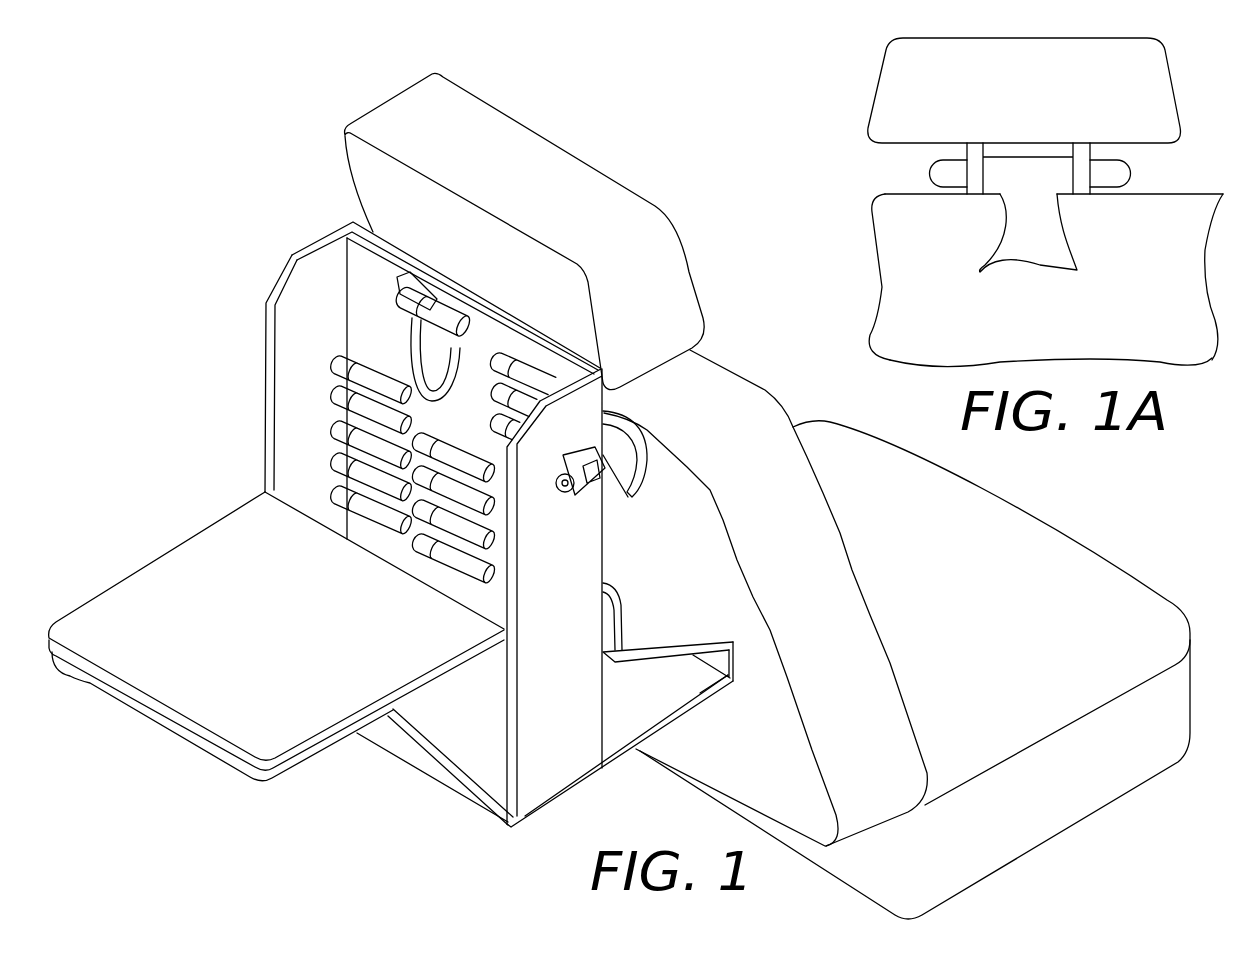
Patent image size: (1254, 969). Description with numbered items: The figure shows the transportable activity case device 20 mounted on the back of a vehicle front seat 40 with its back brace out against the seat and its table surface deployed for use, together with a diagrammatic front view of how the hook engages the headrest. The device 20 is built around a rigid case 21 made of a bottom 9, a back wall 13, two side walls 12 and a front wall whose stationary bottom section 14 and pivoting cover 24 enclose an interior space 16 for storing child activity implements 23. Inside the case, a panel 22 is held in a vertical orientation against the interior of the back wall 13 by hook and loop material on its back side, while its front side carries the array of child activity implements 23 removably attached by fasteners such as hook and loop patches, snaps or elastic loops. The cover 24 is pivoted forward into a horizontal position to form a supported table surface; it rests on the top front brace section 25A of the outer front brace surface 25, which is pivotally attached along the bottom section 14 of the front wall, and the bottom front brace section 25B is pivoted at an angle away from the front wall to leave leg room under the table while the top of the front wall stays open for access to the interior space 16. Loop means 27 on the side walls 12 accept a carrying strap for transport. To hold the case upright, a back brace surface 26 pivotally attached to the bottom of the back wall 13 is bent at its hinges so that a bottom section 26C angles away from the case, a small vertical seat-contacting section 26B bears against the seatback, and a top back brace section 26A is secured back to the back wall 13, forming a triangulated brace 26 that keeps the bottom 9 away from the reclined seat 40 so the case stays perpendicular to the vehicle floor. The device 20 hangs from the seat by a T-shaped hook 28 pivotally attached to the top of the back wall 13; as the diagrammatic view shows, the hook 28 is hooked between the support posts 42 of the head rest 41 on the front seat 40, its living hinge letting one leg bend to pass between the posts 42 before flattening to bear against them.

In FIG. 1, the bottom 9 is at (563, 807).
In FIG. 1, the side walls 12 is at (537, 740).
In FIG. 1, the back wall 13 is at (480, 298).
In FIG. 1, the stationary bottom section of the front wall 14 is at (483, 752).
In FIG. 1, the interior space 16 is at (320, 497).
In FIG. 1, the transportable activity case device 20 is at (252, 322).
In FIG. 1, the rigid case 21 is at (318, 243).
In FIG. 1, the panel 22 is at (368, 255).
In FIG. 1, the child activity implements 23 is at (337, 433).
In FIG. 1, the cover 24 is at (167, 563).
In FIG. 1, the front brace surface 25 is at (312, 765).
In FIG. 1, the top front brace section 25A is at (320, 757).
In FIG. 1, the bottom front brace section 25B is at (413, 757).
In FIG. 1, the back brace surface 26 is at (747, 670).
In FIG. 1, the top back brace section 26A is at (643, 617).
In FIG. 1, the bottom back brace section 26B is at (737, 663).
In FIG. 1, the bottom section of the back brace 26C is at (687, 717).
In FIG. 1, the loop means 27 is at (583, 500).
In FIG. 1, the T-shaped hook 28 is at (643, 468).
In FIG. 1A, the T-shaped hook 28 is at (1102, 180).
In FIG. 1, the front seat 40 is at (776, 410).
In FIG. 1A, the front seat 40 is at (883, 280).
In FIG. 1, the head rest 41 is at (683, 267).
In FIG. 1A, the head rest 41 is at (877, 100).
In FIG. 1A, the support posts 42 is at (952, 148).